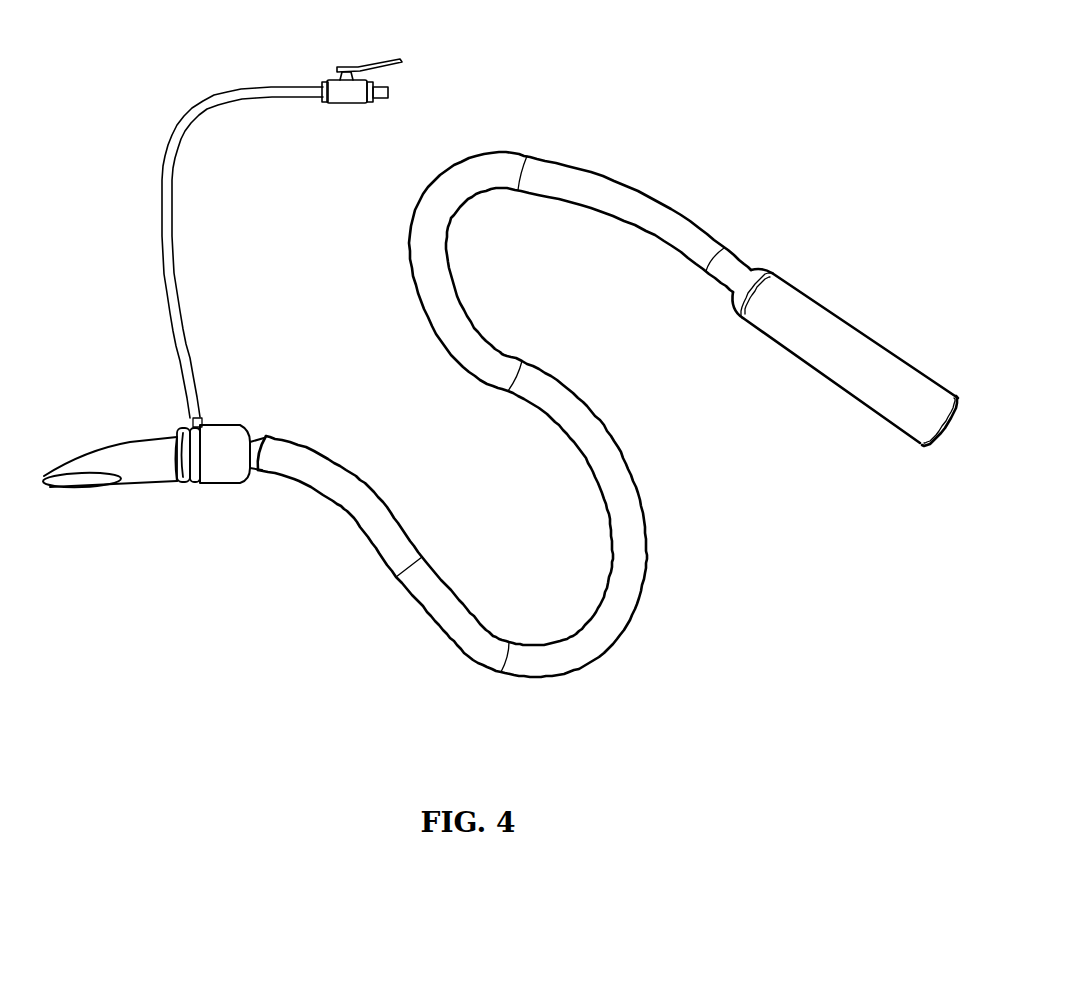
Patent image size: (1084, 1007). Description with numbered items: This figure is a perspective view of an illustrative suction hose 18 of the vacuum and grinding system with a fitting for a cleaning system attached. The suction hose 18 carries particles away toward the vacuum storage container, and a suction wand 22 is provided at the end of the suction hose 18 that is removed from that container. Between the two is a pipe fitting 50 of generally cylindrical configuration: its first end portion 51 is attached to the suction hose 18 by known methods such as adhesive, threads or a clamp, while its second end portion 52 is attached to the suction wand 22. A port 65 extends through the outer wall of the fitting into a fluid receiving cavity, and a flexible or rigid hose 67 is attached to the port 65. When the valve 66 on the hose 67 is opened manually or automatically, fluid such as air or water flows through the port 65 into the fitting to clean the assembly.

The suction hose 18 is at (580, 137).
The suction wand 22 is at (108, 450).
The pipe fitting 50 is at (210, 485).
The first end portion 51 is at (255, 440).
The second end portion 52 is at (178, 486).
The port 65 is at (203, 424).
The valve 66 is at (343, 64).
The hose 67 is at (197, 107).